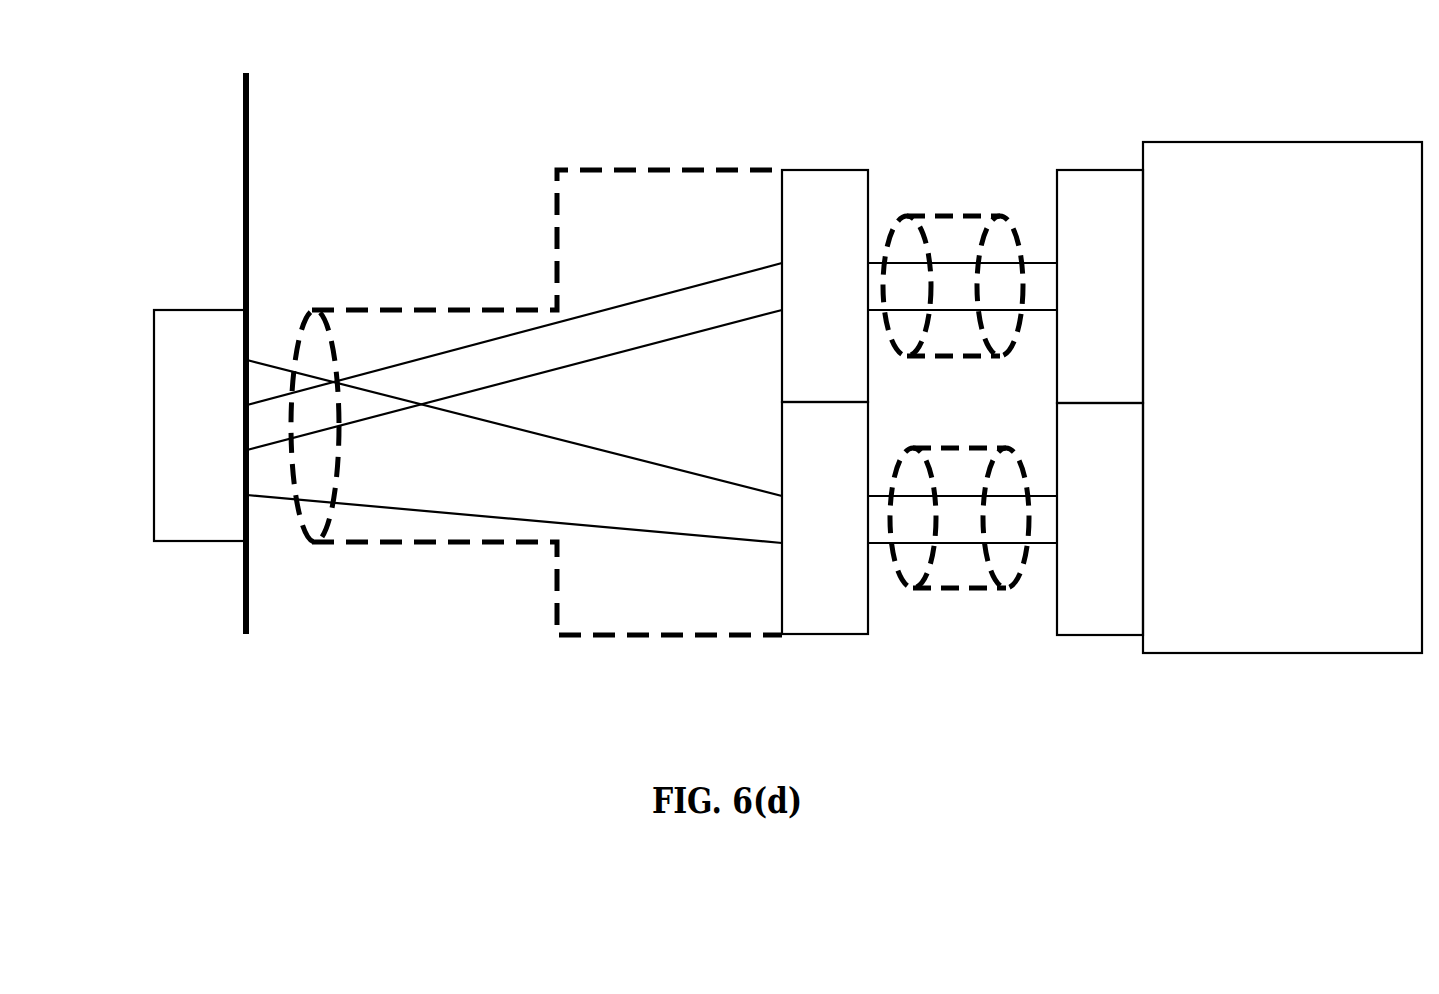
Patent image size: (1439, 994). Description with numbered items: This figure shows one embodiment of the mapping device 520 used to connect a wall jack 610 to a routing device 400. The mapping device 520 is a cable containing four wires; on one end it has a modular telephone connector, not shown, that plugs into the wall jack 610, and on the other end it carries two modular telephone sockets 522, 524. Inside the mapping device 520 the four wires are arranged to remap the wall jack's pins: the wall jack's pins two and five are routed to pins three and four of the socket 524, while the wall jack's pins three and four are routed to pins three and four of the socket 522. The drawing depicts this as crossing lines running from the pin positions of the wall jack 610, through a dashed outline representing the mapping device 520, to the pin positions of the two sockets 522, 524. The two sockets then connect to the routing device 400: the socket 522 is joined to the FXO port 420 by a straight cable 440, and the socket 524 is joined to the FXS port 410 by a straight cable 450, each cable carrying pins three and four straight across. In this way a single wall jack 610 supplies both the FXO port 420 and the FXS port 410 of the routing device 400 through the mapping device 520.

The routing device 400 is at (1230, 142).
The FXS port 410 is at (1093, 635).
The FXO port 420 is at (1095, 170).
The straight cable 440 is at (953, 212).
The straight cable 450 is at (958, 444).
The mapping device 520 is at (385, 310).
The RJ-11 socket 522 is at (803, 170).
The RJ-11 socket 524 is at (803, 635).
The wall jack 610 is at (198, 308).